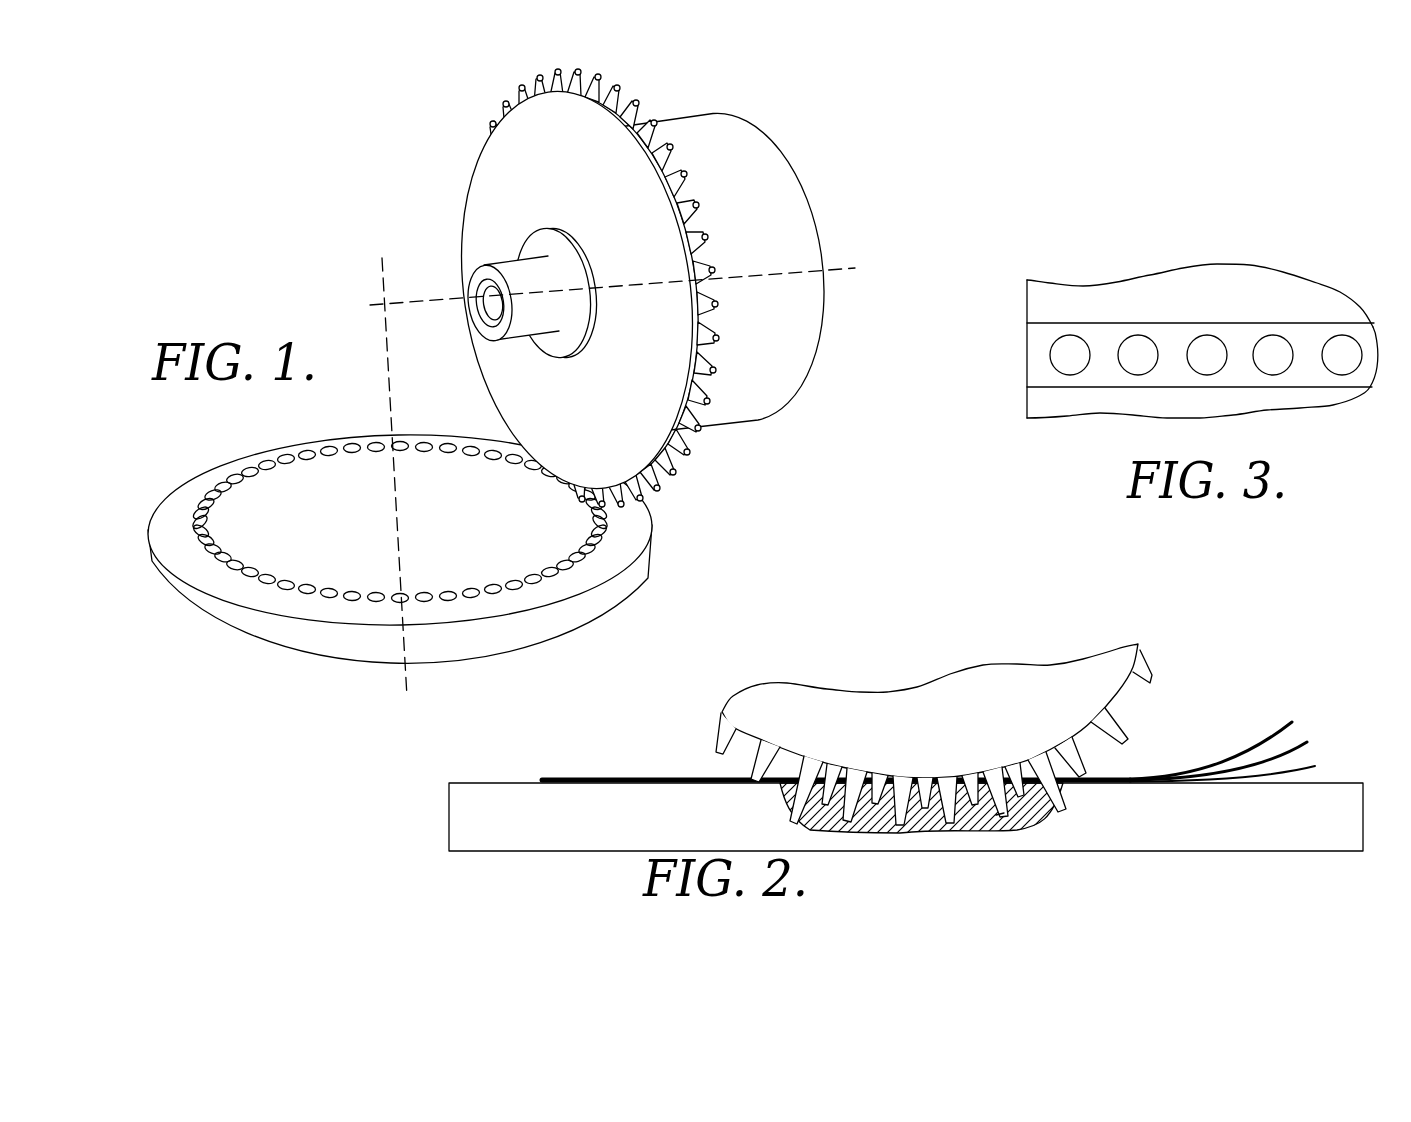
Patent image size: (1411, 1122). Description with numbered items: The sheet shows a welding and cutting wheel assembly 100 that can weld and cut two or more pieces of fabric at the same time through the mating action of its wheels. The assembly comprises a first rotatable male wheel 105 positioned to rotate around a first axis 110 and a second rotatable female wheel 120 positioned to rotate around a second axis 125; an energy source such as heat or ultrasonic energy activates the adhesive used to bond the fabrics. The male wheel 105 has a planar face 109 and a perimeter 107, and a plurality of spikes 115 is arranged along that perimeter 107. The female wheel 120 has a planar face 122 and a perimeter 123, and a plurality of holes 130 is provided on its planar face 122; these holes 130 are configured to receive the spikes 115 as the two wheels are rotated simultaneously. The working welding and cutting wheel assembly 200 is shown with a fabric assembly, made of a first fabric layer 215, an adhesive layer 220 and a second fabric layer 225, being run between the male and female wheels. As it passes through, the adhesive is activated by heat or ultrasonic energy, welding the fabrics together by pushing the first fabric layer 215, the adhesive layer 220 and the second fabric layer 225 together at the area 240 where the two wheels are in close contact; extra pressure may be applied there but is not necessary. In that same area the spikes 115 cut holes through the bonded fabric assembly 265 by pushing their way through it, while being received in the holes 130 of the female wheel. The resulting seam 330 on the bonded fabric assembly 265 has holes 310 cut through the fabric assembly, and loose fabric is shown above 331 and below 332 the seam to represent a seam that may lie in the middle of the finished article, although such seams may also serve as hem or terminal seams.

In FIG. 1, the wheel assembly 100 is at (266, 217).
In FIG. 1, the first rotatable male wheel 105 is at (768, 152).
In FIG. 1, the perimeter 107 is at (710, 400).
In FIG. 1, the planar face 109 is at (490, 377).
In FIG. 1, the first axis 110 is at (857, 270).
In FIG. 1, the spikes 115 is at (600, 90).
In FIG. 2, the spikes 115 is at (1120, 722).
In FIG. 1, the second rotatable female wheel 120 is at (229, 652).
In FIG. 1, the planar face 122 is at (218, 476).
In FIG. 1, the perimeter 123 is at (605, 606).
In FIG. 1, the second axis 125 is at (405, 674).
In FIG. 1, the holes 130 is at (387, 598).
In FIG. 2, the holes 130 is at (1012, 815).
In FIG. 2, the welding and cutting wheel assembly 200 is at (1235, 625).
In FIG. 2, the first fabric layer 215 is at (1286, 722).
In FIG. 2, the adhesive layer 220 is at (1306, 742).
In FIG. 2, the second fabric layer 225 is at (1314, 766).
In FIG. 2, the area 240 is at (977, 853).
In FIG. 2, the bonded fabric assembly 265 is at (628, 778).
In FIG. 3, the bonded fabric assembly 265 is at (1132, 255).
In FIG. 3, the holes 310 is at (1208, 336).
In FIG. 3, the seam 330 is at (1032, 352).
In FIG. 3, the loose fabric above the seam 331 is at (1032, 292).
In FIG. 3, the loose fabric below the seam 332 is at (1032, 402).